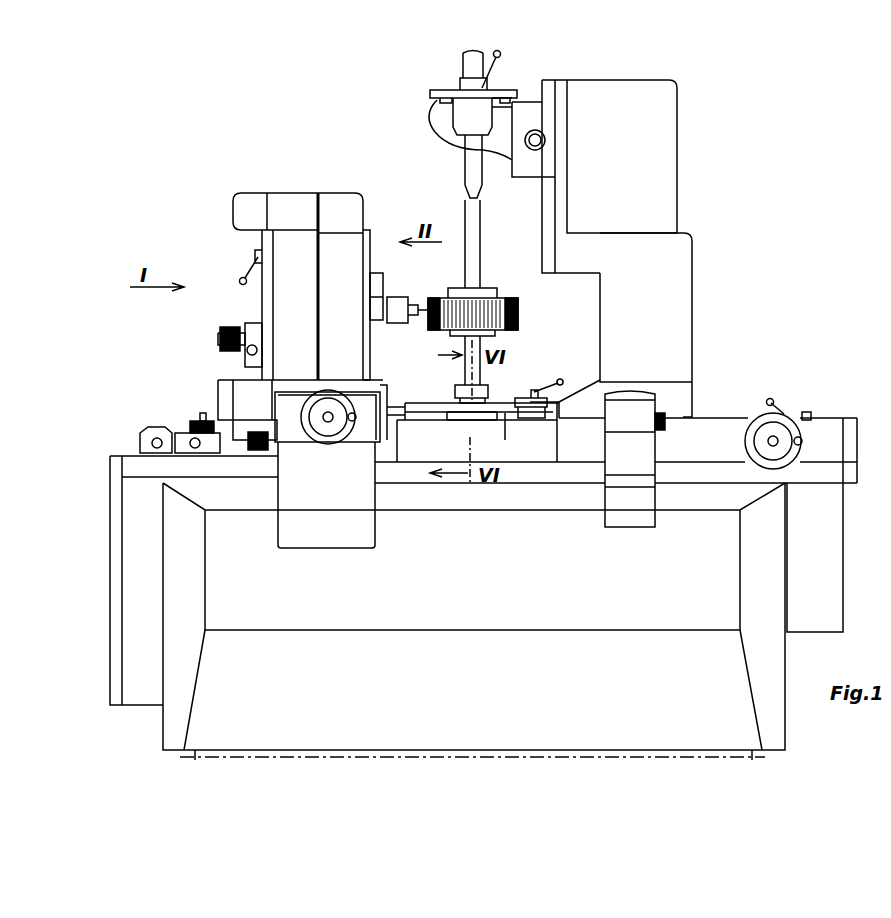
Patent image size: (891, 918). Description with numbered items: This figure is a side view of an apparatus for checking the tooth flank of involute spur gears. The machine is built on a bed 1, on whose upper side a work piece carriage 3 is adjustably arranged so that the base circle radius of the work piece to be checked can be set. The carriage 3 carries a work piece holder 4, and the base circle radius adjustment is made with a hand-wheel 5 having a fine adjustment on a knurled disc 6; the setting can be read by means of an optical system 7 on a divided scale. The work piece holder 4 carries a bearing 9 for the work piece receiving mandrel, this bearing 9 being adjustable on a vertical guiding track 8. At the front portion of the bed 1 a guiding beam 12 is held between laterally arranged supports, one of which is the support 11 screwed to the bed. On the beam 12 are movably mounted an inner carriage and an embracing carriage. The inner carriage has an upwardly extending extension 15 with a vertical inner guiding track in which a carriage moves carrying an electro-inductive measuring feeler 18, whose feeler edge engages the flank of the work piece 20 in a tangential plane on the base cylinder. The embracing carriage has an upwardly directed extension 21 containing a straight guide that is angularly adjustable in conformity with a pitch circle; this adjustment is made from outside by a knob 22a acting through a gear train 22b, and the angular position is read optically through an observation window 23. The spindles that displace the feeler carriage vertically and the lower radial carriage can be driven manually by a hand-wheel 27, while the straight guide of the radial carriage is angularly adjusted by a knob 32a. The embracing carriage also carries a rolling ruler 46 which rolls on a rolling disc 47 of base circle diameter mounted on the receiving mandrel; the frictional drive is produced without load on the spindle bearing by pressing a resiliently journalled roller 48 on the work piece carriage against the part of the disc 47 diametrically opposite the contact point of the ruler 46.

The bed 1 is at (150, 556).
The work piece carriage 3 is at (700, 457).
The work piece holder 4 is at (672, 303).
The hand-wheel 5 is at (779, 412).
The knurled disc 6 is at (809, 414).
The optical system 7 is at (650, 393).
The vertical guiding track 8 is at (553, 203).
The bearing 9 is at (528, 114).
The support 11 is at (343, 548).
The guiding beam 12 is at (367, 433).
The extension 15 is at (355, 258).
The electro-inductive measuring feeler 18 is at (407, 306).
The work piece 20 is at (519, 311).
The extension 21 is at (282, 286).
The knob 22a is at (247, 352).
The gear train 22b is at (228, 324).
The observation window 23 is at (238, 206).
The hand-wheel 27 is at (326, 444).
The knob 32a is at (190, 438).
The rolling ruler 46 is at (415, 406).
The rolling disc 47 is at (505, 440).
The roller 48 is at (522, 397).